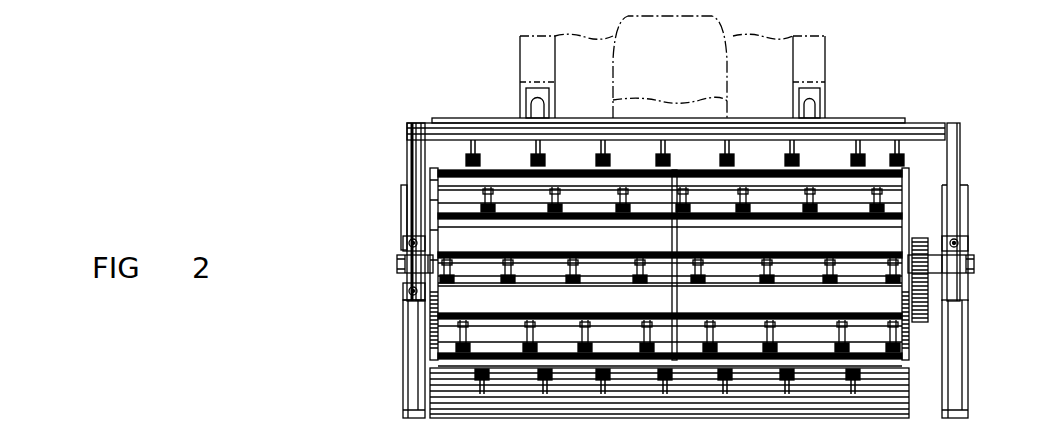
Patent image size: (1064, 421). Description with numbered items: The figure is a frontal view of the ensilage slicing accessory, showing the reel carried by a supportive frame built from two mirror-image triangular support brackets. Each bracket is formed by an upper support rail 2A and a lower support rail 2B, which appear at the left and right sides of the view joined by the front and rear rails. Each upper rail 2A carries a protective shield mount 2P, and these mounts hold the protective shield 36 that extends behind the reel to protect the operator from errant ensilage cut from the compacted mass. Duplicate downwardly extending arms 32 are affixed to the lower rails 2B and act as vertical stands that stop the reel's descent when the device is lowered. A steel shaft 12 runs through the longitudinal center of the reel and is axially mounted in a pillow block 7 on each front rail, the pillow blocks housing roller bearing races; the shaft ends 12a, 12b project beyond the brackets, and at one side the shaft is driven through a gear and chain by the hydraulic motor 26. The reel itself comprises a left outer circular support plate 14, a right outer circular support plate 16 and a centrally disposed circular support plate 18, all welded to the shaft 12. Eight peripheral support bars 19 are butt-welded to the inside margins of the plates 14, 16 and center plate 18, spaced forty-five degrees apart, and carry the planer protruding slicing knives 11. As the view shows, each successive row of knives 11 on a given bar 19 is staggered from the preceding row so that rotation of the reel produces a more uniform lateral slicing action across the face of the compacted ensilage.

The lower support rail 2B is at (610, 59).
The protective shield mount 2P is at (407, 123).
The upper support rail 2A is at (405, 202).
The pillow block 7 is at (405, 245).
The slicing knives 11 is at (547, 372).
The shaft 12 is at (398, 266).
The shaft bolt 12a is at (397, 273).
The shaft end 12b is at (974, 267).
The left outer circular support plate 14 is at (906, 192).
The right outer circular support plate 16 is at (431, 174).
The center circular support plate 18 is at (660, 178).
The peripheral support bars 19 is at (522, 250).
The hydraulic motor 26 is at (923, 245).
The downwardly extending arms 32 is at (410, 348).
The protective shield 36 is at (871, 118).